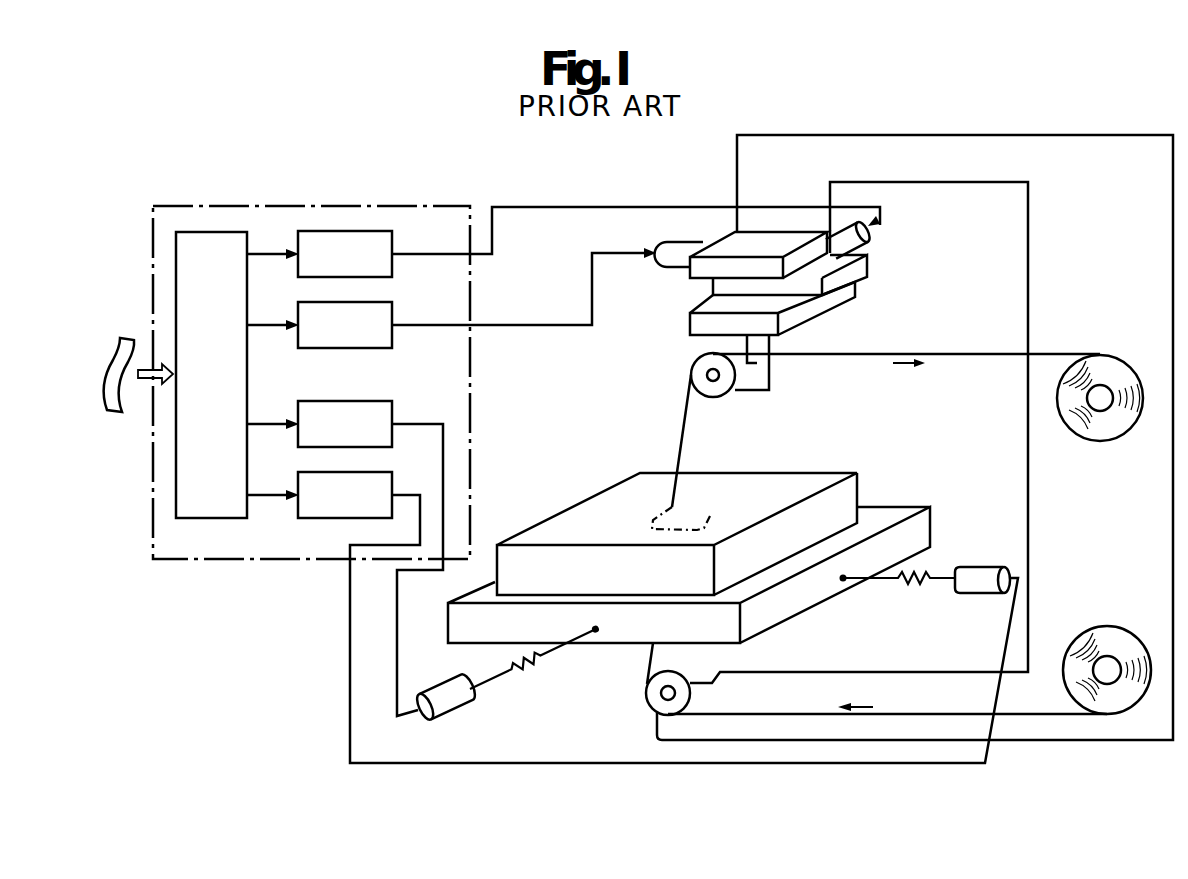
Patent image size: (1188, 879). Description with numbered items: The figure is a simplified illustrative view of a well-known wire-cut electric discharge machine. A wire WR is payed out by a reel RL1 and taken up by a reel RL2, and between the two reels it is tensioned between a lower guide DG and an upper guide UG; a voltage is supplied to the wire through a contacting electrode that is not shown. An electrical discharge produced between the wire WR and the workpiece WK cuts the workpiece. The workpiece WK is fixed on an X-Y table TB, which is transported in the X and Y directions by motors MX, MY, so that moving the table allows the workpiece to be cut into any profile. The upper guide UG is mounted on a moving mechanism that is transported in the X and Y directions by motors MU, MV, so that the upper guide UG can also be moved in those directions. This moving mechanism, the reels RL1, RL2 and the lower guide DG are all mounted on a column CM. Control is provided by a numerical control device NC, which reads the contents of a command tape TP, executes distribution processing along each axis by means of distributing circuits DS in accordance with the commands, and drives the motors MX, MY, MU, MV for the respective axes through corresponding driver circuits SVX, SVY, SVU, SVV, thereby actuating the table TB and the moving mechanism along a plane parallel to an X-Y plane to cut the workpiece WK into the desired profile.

The numerical control device NC is at (345, 204).
The distributing circuits DS is at (237, 375).
The driver circuit SVV is at (589, 242).
The driver circuit SVU is at (477, 298).
The driver circuit SVY is at (370, 558).
The driver circuit SVX is at (658, 617).
The command tape TP is at (110, 412).
The column CM is at (1028, 297).
The motor MU is at (690, 243).
The motor MV is at (867, 241).
The upper guide UG is at (707, 397).
The wire WR is at (683, 422).
The workpiece WK is at (807, 473).
The X-Y table TB is at (893, 507).
The motor MX is at (980, 568).
The motor MY is at (462, 703).
The lower guide DG is at (652, 692).
The reel RL2 is at (1090, 441).
The reel RL1 is at (1100, 627).